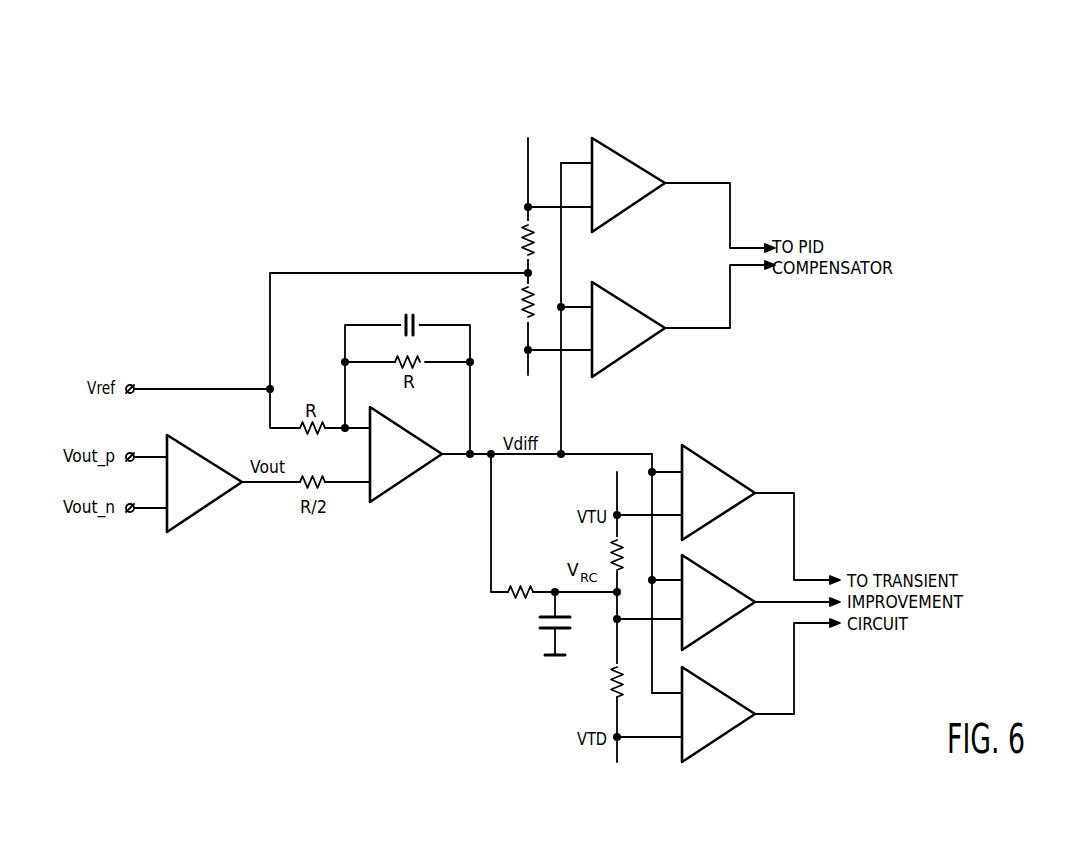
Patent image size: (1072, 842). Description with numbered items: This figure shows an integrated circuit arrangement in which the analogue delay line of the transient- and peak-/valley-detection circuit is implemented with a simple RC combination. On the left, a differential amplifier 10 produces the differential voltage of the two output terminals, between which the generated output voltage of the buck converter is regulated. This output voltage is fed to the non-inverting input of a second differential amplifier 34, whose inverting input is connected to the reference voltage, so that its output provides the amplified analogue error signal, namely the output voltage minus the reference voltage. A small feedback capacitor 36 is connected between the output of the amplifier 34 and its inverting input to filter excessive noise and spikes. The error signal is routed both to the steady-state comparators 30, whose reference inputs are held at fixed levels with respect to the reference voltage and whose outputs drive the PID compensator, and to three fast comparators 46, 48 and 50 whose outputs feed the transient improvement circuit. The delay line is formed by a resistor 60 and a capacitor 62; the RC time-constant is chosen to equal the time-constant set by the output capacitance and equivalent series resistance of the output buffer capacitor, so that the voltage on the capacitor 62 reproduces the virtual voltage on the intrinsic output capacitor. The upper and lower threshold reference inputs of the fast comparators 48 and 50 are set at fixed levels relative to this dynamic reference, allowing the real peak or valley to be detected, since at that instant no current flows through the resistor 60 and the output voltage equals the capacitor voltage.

The differential amplifier 10 is at (197, 512).
The steady-state comparators 30 is at (630, 210).
The differential amplifier 34 is at (400, 488).
The feedback capacitor 36 is at (413, 318).
The fast comparator 46 is at (725, 576).
The fast comparator 48 is at (712, 462).
The fast comparator 50 is at (726, 698).
The resistor 60 is at (512, 600).
The capacitor 62 is at (540, 630).